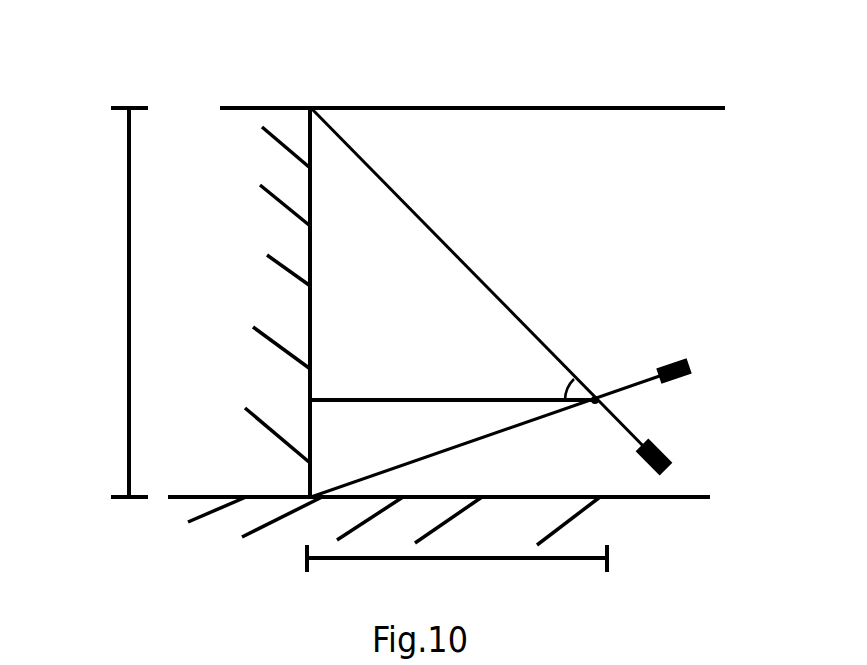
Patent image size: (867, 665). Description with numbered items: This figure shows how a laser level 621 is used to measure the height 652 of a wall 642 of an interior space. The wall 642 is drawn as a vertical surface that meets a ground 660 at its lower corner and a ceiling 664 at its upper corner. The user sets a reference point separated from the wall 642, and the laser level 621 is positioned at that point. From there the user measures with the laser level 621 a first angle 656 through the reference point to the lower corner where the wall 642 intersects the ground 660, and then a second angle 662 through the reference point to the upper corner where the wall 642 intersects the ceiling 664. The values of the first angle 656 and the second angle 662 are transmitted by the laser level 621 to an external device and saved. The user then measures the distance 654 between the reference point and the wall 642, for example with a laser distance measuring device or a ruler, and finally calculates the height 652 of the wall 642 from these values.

The laser level 621 is at (686, 375).
The wall 642 is at (310, 243).
The height 652 is at (129, 400).
The distance 654 is at (373, 560).
The first angle 656 is at (545, 406).
The ground 660 is at (636, 495).
The second angle 662 is at (558, 383).
The ceiling 664 is at (516, 108).